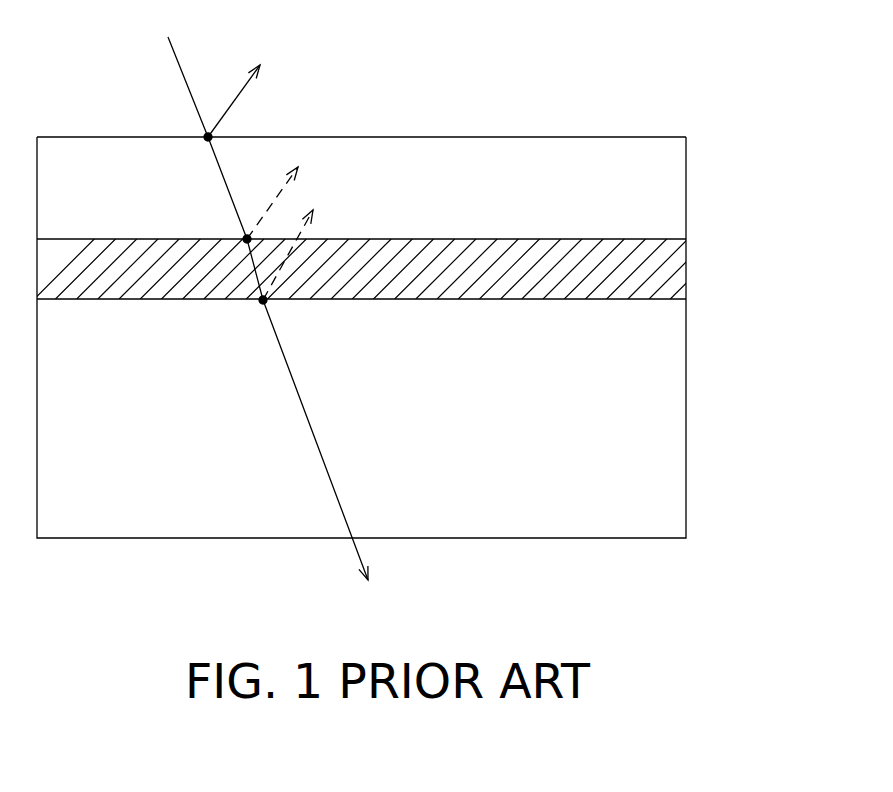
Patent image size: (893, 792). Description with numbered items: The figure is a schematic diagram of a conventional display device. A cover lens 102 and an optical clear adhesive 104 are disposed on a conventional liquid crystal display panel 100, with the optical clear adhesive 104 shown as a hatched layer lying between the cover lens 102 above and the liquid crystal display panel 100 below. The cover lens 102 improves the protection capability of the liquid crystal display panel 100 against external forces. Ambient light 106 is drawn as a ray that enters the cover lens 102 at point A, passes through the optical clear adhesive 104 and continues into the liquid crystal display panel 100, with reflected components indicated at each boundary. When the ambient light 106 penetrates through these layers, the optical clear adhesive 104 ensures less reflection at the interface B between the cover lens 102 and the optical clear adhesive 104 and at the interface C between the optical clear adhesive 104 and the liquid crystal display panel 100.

The liquid crystal display panel 100 is at (680, 396).
The cover lens 102 is at (680, 191).
The optical clear adhesive 104 is at (680, 282).
The ambient light 106 is at (254, 294).